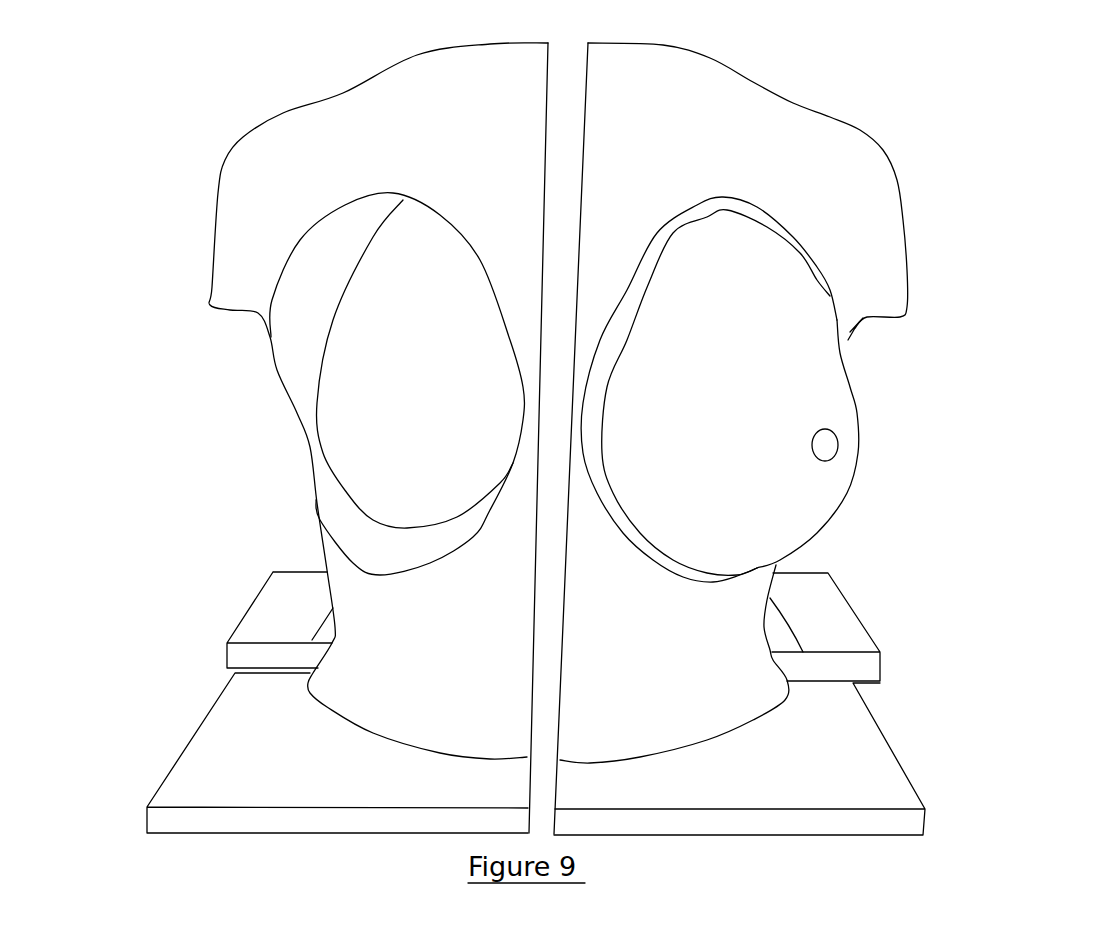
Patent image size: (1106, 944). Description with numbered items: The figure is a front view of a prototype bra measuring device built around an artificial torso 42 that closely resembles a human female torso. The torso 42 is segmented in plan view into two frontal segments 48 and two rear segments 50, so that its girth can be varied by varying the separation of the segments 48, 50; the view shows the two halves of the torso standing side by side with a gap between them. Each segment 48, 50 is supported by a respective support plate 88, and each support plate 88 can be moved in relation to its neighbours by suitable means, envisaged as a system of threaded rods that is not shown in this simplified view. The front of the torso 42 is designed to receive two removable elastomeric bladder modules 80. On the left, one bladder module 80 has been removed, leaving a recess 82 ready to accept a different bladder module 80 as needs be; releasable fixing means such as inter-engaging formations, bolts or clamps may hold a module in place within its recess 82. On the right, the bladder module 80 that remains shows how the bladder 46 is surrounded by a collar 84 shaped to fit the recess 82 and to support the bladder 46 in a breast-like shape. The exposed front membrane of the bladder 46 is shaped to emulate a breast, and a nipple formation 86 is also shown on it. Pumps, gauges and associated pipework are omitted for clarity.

The artificial torso 42 is at (993, 158).
The bladder 46 is at (828, 488).
The frontal segment 48 is at (292, 142).
The rear segment 50 is at (324, 635).
The bladder module 80 is at (722, 385).
The recess 82 is at (340, 393).
The collar 84 is at (709, 359).
The nipple formation 86 is at (830, 447).
The support plate 88 is at (263, 613).